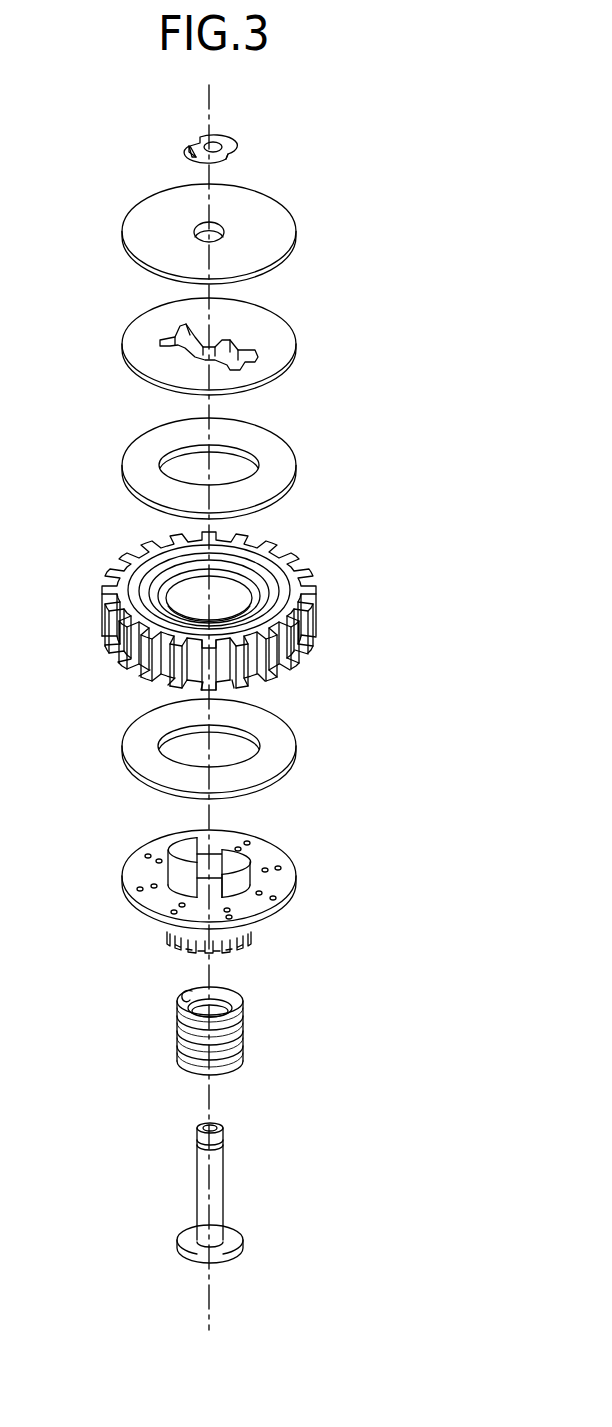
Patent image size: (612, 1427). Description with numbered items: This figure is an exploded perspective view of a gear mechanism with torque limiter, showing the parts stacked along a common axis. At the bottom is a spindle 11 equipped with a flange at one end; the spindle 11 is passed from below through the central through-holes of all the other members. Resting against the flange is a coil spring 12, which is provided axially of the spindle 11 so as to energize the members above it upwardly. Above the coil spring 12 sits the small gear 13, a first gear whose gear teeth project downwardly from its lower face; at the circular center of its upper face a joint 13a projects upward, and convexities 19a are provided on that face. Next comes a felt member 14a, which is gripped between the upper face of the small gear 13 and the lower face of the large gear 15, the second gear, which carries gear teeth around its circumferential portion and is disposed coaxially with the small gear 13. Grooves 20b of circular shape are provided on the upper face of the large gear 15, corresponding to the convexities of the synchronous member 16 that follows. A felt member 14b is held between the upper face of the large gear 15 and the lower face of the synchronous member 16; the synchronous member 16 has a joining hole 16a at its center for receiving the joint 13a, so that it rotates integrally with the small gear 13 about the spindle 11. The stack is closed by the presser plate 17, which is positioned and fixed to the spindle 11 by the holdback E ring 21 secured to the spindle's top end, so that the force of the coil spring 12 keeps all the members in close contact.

The spindle 11 is at (223, 1168).
The coil spring 12 is at (243, 1038).
The small gear 13 is at (230, 882).
The joint 13a is at (177, 847).
The felt member 14a is at (285, 733).
The felt member 14b is at (282, 457).
The large gear 15 is at (254, 611).
The synchronous member 16 is at (247, 344).
The joining hole 16a is at (240, 343).
The presser plate 17 is at (272, 205).
The convexities 19a is at (272, 860).
The grooves 20b is at (273, 579).
The holdback E ring 21 is at (232, 145).